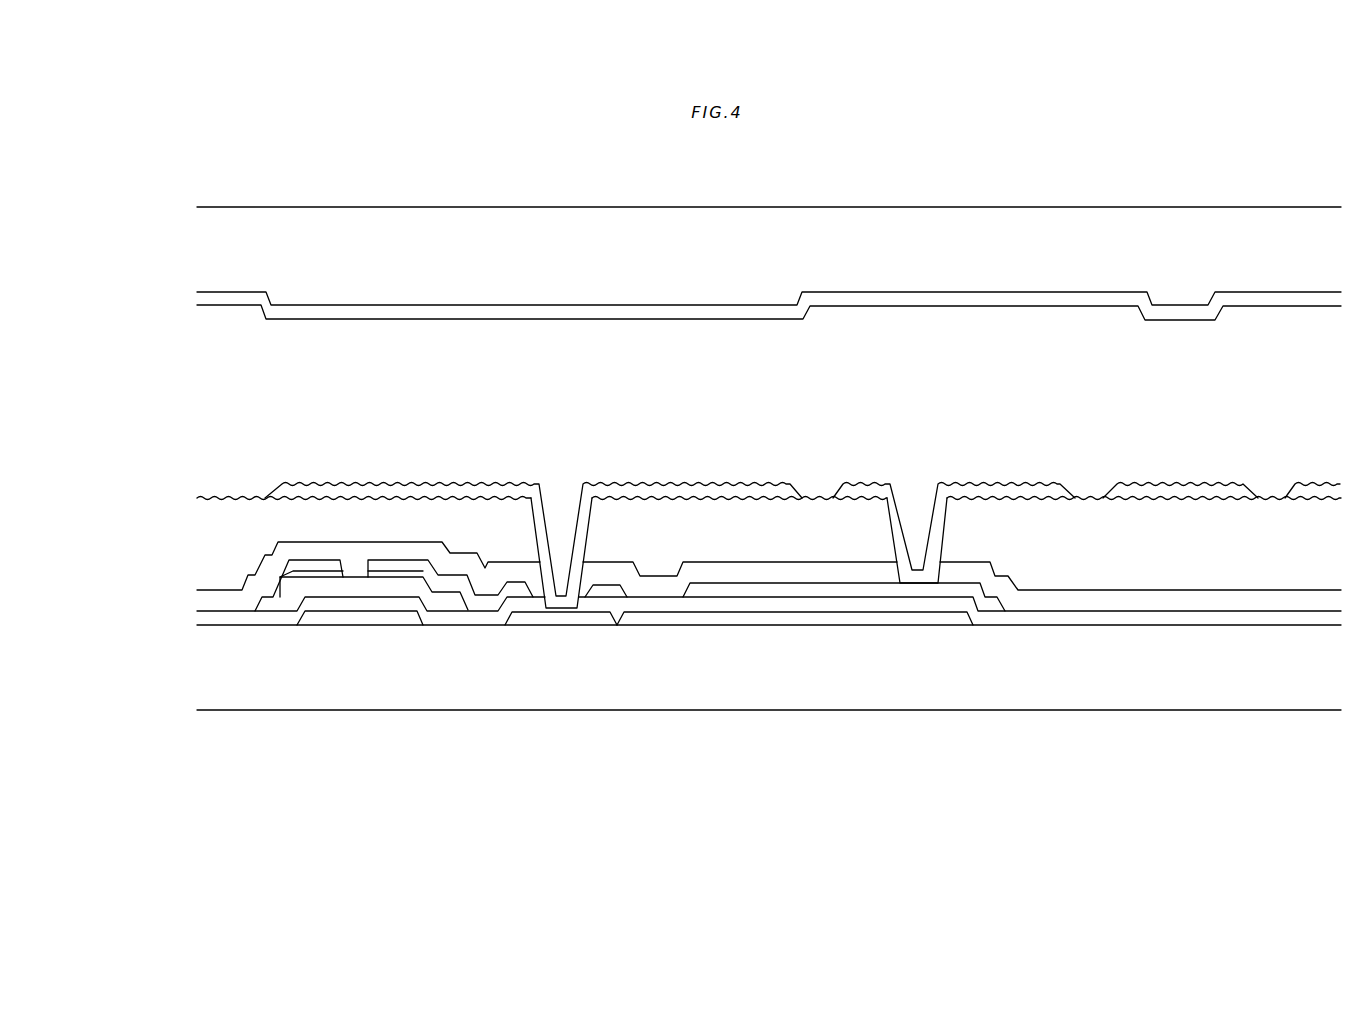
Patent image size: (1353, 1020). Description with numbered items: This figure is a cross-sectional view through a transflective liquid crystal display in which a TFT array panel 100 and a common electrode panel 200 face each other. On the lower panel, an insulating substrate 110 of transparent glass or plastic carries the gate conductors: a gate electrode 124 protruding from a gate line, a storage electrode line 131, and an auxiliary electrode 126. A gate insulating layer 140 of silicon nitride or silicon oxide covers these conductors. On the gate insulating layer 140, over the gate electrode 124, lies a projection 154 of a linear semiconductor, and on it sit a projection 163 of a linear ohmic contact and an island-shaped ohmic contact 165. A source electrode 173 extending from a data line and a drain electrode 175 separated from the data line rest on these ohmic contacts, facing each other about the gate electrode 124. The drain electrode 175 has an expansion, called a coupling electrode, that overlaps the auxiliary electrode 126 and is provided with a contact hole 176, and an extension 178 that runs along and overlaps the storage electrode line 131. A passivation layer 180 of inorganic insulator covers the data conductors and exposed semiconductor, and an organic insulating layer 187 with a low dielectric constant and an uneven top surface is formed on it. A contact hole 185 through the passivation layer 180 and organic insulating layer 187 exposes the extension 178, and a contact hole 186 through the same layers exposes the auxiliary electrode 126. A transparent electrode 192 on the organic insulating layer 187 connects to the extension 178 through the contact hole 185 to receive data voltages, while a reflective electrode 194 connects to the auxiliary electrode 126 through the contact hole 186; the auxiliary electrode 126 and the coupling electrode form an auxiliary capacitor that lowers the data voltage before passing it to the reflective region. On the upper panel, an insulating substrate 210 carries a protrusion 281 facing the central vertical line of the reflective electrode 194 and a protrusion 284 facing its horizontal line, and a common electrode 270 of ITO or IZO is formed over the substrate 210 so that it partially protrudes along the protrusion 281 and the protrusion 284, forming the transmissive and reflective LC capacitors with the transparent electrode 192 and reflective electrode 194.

The TFT array panel 100 is at (196, 419).
The insulating substrate 110 is at (921, 690).
The gate electrode 124 is at (363, 617).
The auxiliary electrode 126 is at (562, 618).
The storage electrode line 131 is at (815, 622).
The gate insulating layer 140 is at (1025, 618).
The projection of the semiconductor 154 is at (332, 590).
The projection of the linear ohmic contact 163 is at (300, 582).
The island-shaped ohmic contact 165 is at (397, 577).
The source electrode 173 is at (282, 585).
The drain electrode 175 is at (417, 567).
The contact hole 176 is at (532, 586).
The extension of the drain electrode 178 is at (748, 588).
The passivation layer 180 is at (1114, 597).
The contact hole 185 is at (913, 490).
The contact hole 186 is at (560, 490).
The organic insulating layer 187 is at (1216, 558).
The transparent electrode 192 is at (1000, 490).
The reflective electrode 194 is at (437, 490).
The common electrode panel 200 is at (197, 248).
The insulating substrate 210 is at (817, 223).
The common electrode 270 is at (626, 316).
The protrusion 281 is at (485, 300).
The protrusion 284 is at (1183, 300).